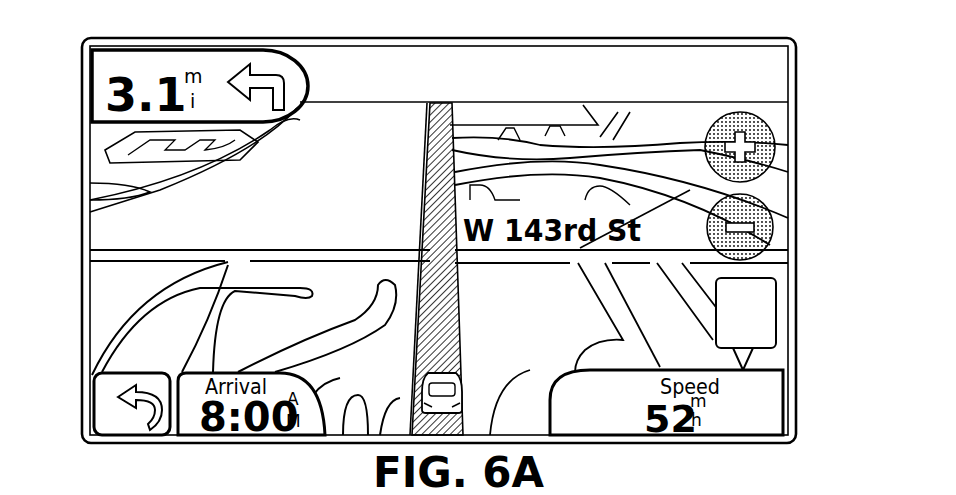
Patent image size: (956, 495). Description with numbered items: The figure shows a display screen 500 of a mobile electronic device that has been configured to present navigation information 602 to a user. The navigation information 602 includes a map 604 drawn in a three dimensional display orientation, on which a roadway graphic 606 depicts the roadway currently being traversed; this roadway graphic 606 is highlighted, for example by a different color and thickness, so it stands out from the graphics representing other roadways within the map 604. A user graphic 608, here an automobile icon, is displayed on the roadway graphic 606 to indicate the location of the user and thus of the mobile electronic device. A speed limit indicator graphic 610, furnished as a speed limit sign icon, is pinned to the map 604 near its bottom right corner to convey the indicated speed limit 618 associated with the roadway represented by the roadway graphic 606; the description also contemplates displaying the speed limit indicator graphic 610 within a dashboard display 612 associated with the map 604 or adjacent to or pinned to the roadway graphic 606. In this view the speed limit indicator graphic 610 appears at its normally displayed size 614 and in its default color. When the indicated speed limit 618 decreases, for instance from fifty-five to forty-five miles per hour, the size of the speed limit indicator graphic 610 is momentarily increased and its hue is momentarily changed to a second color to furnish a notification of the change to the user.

The display screen 500 is at (808, 46).
The navigation information 602 is at (784, 205).
The map 604 is at (108, 336).
The roadway graphic 606 is at (700, 182).
The user graphic 608 is at (460, 373).
The speed limit indicator graphic 610 is at (796, 321).
The dashboard display 612 is at (772, 73).
The normally displayed size 614 is at (776, 328).
The indicated speed limit 618 is at (766, 335).